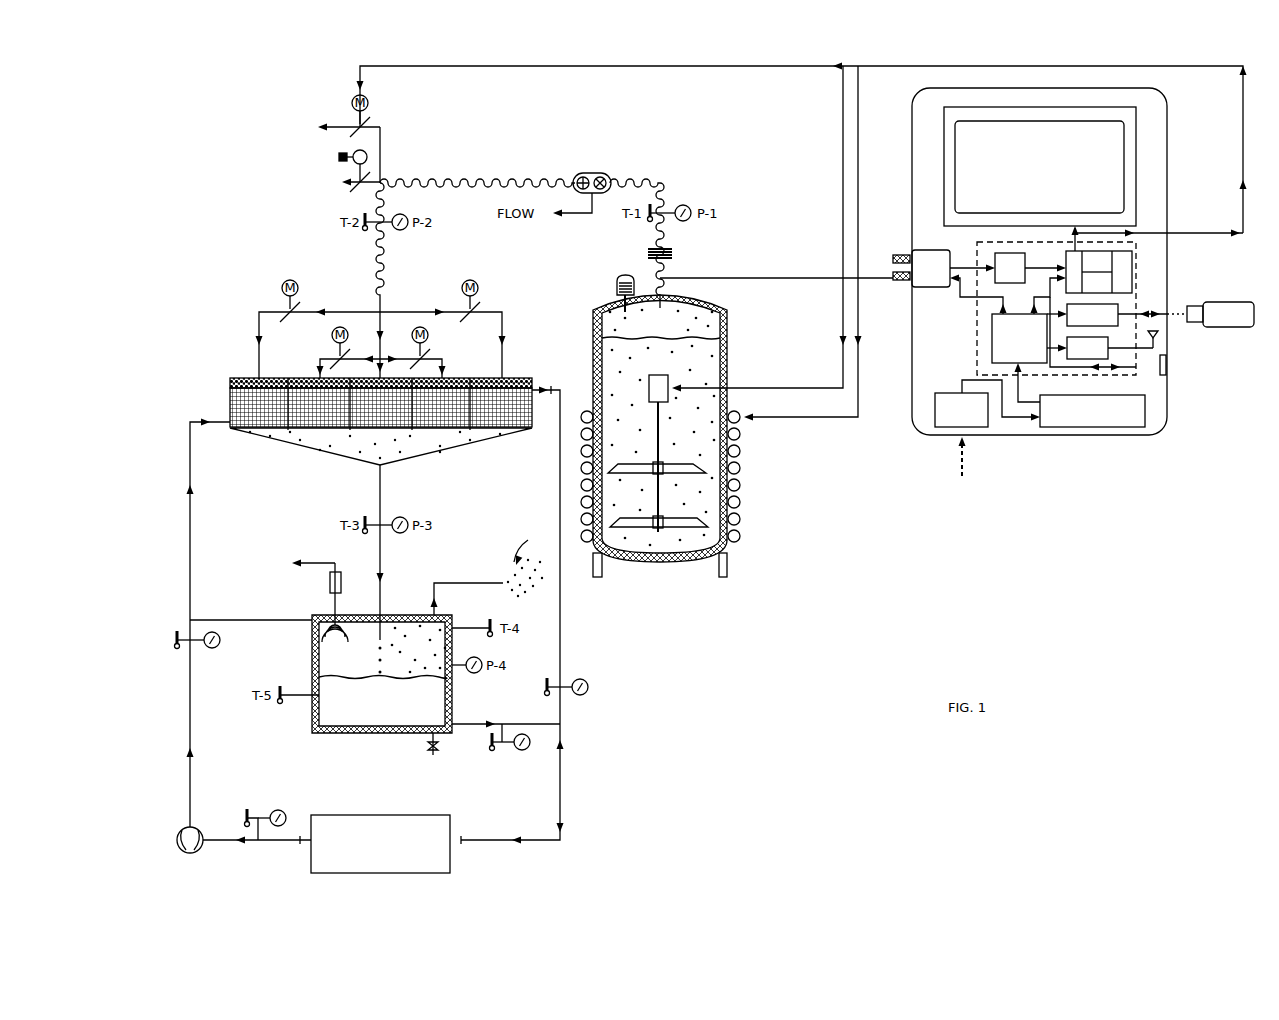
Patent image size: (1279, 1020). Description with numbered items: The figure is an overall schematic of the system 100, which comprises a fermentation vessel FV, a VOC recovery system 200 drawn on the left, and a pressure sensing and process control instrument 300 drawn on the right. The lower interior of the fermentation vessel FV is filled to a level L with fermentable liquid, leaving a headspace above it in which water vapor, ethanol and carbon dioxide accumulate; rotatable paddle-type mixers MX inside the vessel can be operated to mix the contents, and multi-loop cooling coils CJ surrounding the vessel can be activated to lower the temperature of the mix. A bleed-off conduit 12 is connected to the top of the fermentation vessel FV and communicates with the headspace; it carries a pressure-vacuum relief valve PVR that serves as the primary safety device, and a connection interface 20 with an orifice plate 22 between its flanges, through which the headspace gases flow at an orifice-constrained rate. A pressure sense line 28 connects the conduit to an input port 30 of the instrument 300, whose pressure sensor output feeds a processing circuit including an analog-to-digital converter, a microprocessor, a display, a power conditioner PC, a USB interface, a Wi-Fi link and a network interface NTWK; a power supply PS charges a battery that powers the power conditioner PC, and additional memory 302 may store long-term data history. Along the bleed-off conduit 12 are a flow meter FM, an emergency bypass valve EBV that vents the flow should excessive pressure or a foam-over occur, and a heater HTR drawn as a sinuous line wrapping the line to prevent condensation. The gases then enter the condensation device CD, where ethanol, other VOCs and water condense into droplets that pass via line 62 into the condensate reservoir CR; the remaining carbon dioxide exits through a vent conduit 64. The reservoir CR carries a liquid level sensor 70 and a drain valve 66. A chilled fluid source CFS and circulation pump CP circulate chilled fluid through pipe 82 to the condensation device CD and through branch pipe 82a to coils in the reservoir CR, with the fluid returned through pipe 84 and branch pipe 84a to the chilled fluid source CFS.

The system 100 is at (212, 165).
The bleed-off conduit 12 is at (650, 239).
The connection interface 20 is at (678, 251).
The orifice plate 22 is at (640, 258).
The pressure sense line 28 is at (820, 276).
The input port 30 is at (900, 252).
The VOC recovery system 200 is at (679, 742).
The pressure sensing and process control instrument 300 is at (1046, 548).
The additional memory 302 is at (1142, 297).
The line 62 is at (386, 503).
The vent pipe or conduit 64 is at (438, 580).
The drain valve 66 is at (426, 759).
The liquid level sensor 70 is at (328, 597).
The pipe 82 is at (186, 703).
The branch pipe 82a is at (246, 614).
The pipe 84 is at (568, 613).
The branch pipe 84a is at (498, 720).
The emergency bypass valve EBV is at (327, 148).
The flow indicator or meter FM is at (586, 173).
The heater HTR is at (386, 290).
The condensation device CD is at (226, 371).
The pressure-vacuum relief valve PVR is at (608, 289).
The fermentation vessel FV is at (590, 339).
The level L is at (704, 342).
The rotatable paddle-type mixers MX is at (738, 538).
The cooling jacket CJ is at (754, 471).
The condensate reservoir CR is at (324, 742).
The chilled fluid source CFS is at (450, 814).
The circulation pump CP is at (206, 850).
The power conditioner PC is at (986, 339).
The power supply PS is at (952, 388).
The network port NTWK is at (1170, 361).